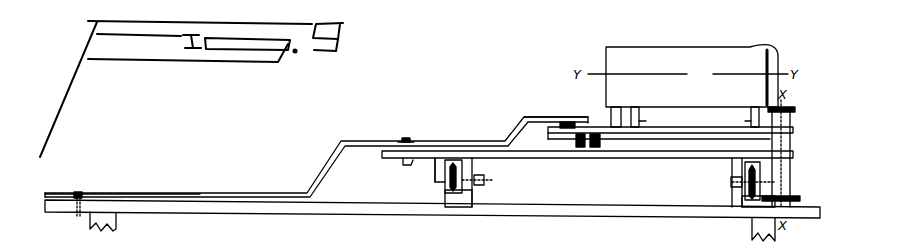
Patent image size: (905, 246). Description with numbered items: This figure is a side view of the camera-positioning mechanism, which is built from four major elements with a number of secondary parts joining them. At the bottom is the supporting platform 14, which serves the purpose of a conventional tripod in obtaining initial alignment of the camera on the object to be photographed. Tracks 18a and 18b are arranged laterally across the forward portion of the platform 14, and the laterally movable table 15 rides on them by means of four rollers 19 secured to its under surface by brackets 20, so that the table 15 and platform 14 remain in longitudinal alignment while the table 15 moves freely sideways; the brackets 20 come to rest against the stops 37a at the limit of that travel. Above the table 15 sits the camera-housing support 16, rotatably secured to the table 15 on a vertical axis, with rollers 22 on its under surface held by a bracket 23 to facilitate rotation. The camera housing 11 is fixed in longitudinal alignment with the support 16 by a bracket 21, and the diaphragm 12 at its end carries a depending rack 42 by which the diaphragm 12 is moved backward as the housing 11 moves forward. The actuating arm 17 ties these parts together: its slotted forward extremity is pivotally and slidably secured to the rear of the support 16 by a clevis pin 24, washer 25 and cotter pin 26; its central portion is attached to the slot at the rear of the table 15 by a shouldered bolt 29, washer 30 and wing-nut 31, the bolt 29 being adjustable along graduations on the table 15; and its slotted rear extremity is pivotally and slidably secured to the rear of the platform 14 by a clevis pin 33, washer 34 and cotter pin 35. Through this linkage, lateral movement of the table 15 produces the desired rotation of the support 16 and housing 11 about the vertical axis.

The camera housing 11 is at (660, 47).
The diaphragm 12 is at (775, 66).
The supporting platform 14 is at (537, 204).
The laterally movable table 15 is at (668, 158).
The camera-housing support 16 is at (673, 127).
The actuating arm 17 is at (320, 161).
The track 18a is at (448, 198).
The track 18b is at (752, 200).
The rollers 19 is at (465, 170).
The brackets 20 is at (437, 170).
The bracket 21 is at (636, 112).
The rollers 22 is at (581, 148).
The bracket 23 is at (597, 148).
The clevis pin 24 is at (553, 117).
The washer 25 is at (570, 120).
The cotter pin 26 is at (552, 136).
The shouldered bolt 29 is at (410, 140).
The washer 30 is at (402, 141).
The wing-nut 31 is at (405, 163).
The clevis pin 33 is at (77, 191).
The washer 34 is at (97, 194).
The cotter pin 35 is at (76, 214).
The stops 37a is at (478, 181).
The rack 42 is at (781, 94).